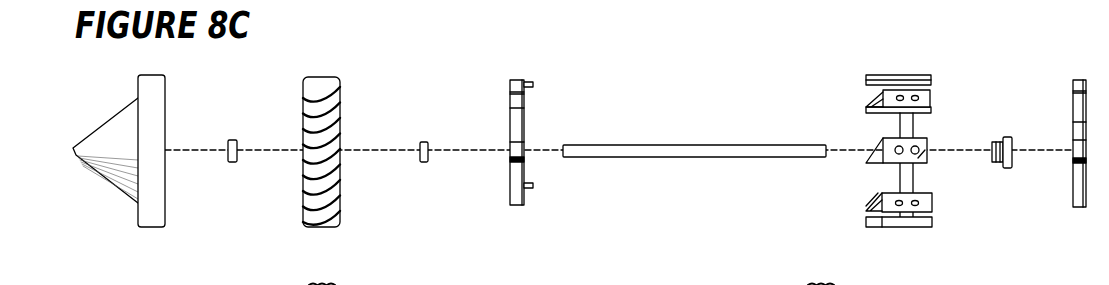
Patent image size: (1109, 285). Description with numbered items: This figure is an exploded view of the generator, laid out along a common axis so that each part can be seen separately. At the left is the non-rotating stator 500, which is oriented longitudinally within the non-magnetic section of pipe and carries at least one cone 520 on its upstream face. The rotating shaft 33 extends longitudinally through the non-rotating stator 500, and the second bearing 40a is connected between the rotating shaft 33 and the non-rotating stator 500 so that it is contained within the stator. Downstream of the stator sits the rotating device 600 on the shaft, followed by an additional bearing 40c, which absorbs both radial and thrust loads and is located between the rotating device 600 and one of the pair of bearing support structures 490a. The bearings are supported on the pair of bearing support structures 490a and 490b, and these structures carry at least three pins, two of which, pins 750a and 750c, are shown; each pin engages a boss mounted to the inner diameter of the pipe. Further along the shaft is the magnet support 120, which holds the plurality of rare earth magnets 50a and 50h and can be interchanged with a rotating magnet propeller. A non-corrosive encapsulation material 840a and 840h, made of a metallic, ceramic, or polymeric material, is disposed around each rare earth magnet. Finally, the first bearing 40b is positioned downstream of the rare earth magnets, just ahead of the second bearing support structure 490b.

The rotating shaft 33 is at (695, 144).
The second bearing 40a is at (233, 140).
The first bearing 40b is at (1007, 137).
The bearing 40c is at (425, 141).
The rare earth magnet 50a is at (919, 153).
The rare earth magnet 50h is at (916, 74).
The magnet support 120 is at (916, 159).
The bearing support structure 490a is at (524, 145).
The bearing support structure 490b is at (1078, 207).
The non-rotating stator 500 is at (152, 74).
The cone 520 is at (108, 122).
The rotating device 600 is at (318, 76).
The pin 750a is at (537, 73).
The pin 750c is at (548, 200).
The non-corrosive encapsulation material 840a is at (922, 146).
The non-corrosive encapsulation material 840h is at (908, 95).